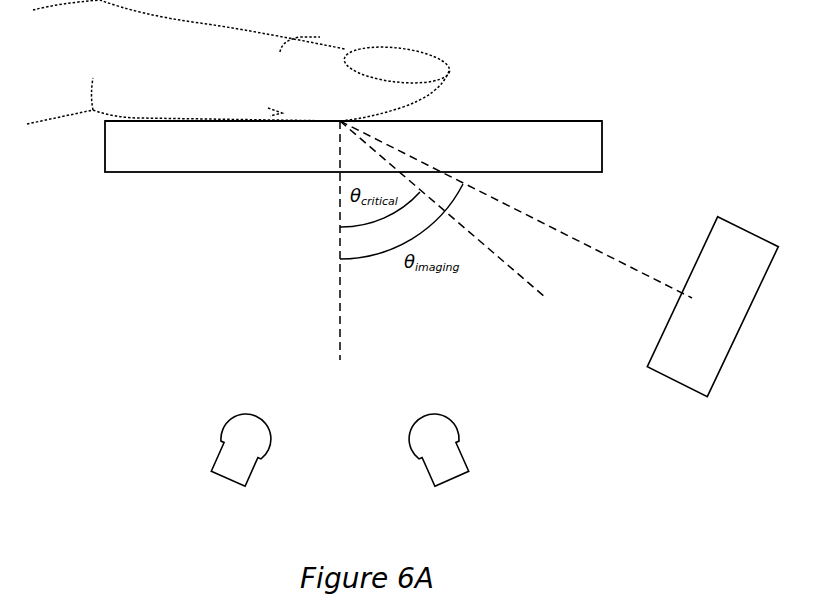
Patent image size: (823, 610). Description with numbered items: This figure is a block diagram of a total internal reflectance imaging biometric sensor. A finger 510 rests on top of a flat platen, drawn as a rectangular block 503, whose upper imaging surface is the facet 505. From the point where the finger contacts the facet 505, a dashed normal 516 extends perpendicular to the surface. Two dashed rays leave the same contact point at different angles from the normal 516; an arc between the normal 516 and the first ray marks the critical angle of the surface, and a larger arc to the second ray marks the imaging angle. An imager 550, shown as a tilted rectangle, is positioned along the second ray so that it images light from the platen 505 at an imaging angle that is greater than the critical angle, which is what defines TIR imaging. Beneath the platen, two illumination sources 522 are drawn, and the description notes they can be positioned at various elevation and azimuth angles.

The platen / cover glass 503 is at (353, 146).
The platen 505 is at (565, 120).
The finger 510 is at (239, 62).
The normal 516 is at (340, 324).
The illumination sources 522 is at (232, 449).
The imager 550 is at (710, 368).